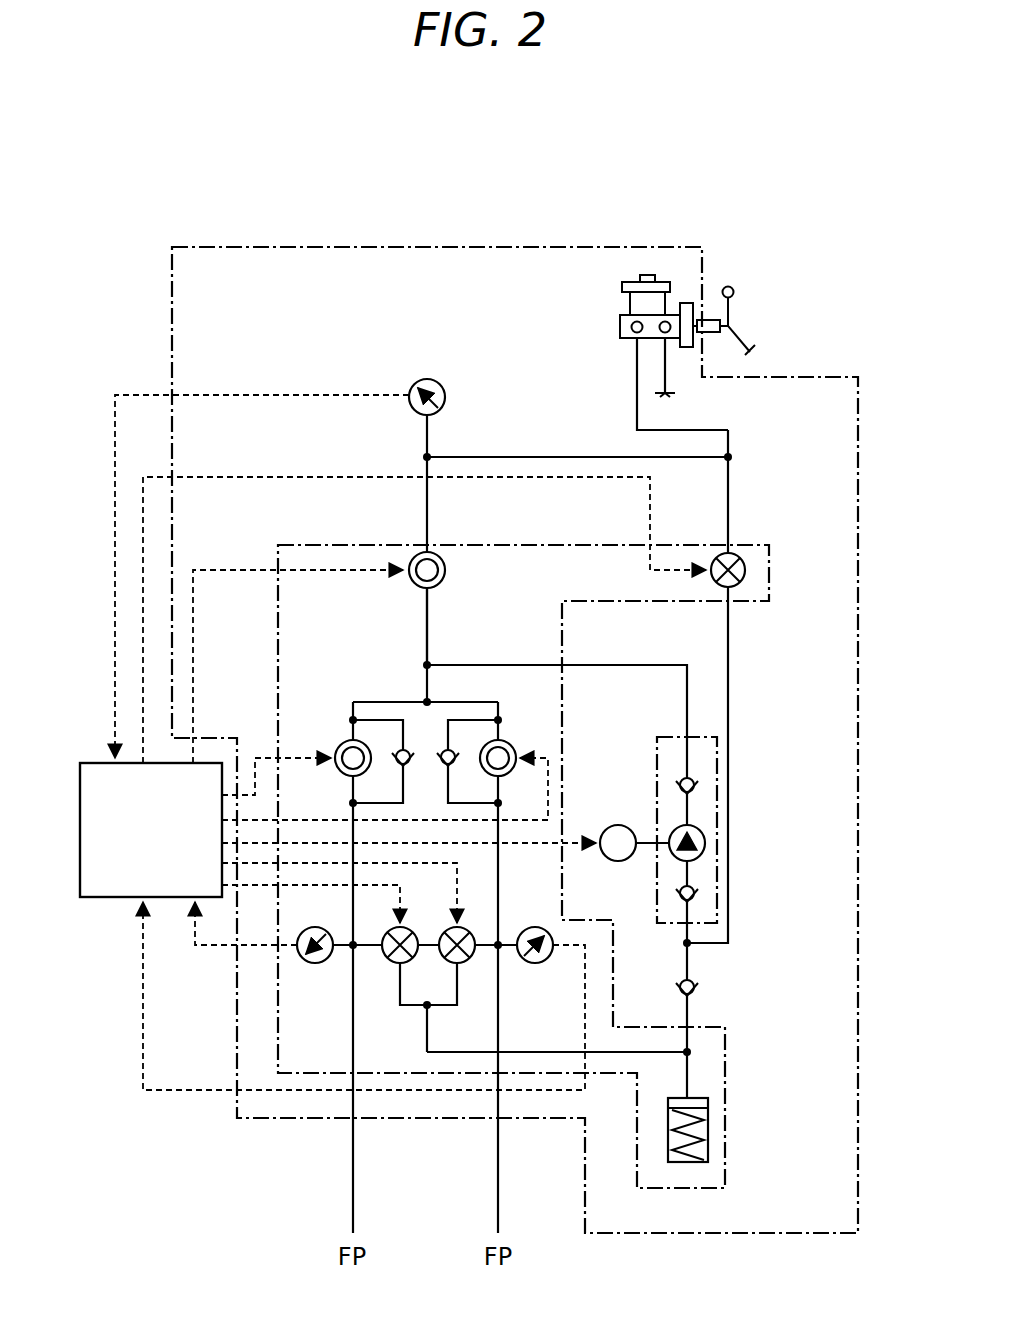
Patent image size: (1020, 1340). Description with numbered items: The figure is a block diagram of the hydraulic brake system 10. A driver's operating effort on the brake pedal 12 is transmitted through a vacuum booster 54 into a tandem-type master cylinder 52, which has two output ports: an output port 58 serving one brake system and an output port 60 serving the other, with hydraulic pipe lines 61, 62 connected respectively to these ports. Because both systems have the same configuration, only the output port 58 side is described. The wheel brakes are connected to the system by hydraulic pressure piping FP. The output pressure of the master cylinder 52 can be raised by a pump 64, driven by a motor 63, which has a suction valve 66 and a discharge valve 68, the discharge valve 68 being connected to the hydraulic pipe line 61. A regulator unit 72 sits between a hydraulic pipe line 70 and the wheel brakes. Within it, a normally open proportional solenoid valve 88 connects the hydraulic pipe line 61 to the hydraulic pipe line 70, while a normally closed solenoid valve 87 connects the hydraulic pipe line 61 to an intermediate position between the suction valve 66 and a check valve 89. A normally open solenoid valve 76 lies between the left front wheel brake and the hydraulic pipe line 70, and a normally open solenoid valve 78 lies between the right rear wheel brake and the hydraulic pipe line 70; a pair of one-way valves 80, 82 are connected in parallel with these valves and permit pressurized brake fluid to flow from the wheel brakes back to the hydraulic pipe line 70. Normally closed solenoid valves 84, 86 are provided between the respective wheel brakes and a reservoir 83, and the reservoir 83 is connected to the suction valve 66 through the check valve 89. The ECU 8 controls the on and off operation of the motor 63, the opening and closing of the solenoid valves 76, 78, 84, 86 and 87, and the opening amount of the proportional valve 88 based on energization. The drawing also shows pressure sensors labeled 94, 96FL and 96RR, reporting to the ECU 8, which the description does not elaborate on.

The ECU 8 is at (80, 836).
The hydraulic brake system 10 is at (430, 243).
The brake pedal 12 is at (738, 308).
The master cylinder 52 is at (620, 316).
The vacuum booster 54 is at (690, 303).
The output port 58 is at (632, 327).
The output port 60 is at (660, 338).
The hydraulic pipe line 61 is at (556, 455).
The hydraulic pipe line 62 is at (675, 388).
The motor 63 is at (615, 826).
The pump 64 is at (657, 740).
The suction valve 66 is at (695, 893).
The discharge valve 68 is at (695, 785).
The hydraulic pipe line 70 is at (425, 617).
The regulator unit 72 is at (290, 545).
The normally open solenoid valve 76 is at (340, 748).
The normally open solenoid valve 78 is at (512, 748).
The one-way valve 80 is at (398, 750).
The one-way valve 82 is at (452, 750).
The reservoir 83 is at (708, 1135).
The normally closed solenoid valve 84 is at (390, 933).
The normally closed solenoid valve 86 is at (466, 933).
The normally closed solenoid valve 87 is at (748, 572).
The normally open proportional solenoid valve 88 is at (448, 570).
The check valve 89 is at (695, 985).
The pressure sensor 94 is at (413, 385).
The wheel cylinder pressure sensor (front left) 96FL is at (315, 963).
The wheel cylinder pressure sensor (rear right) 96RR is at (535, 963).